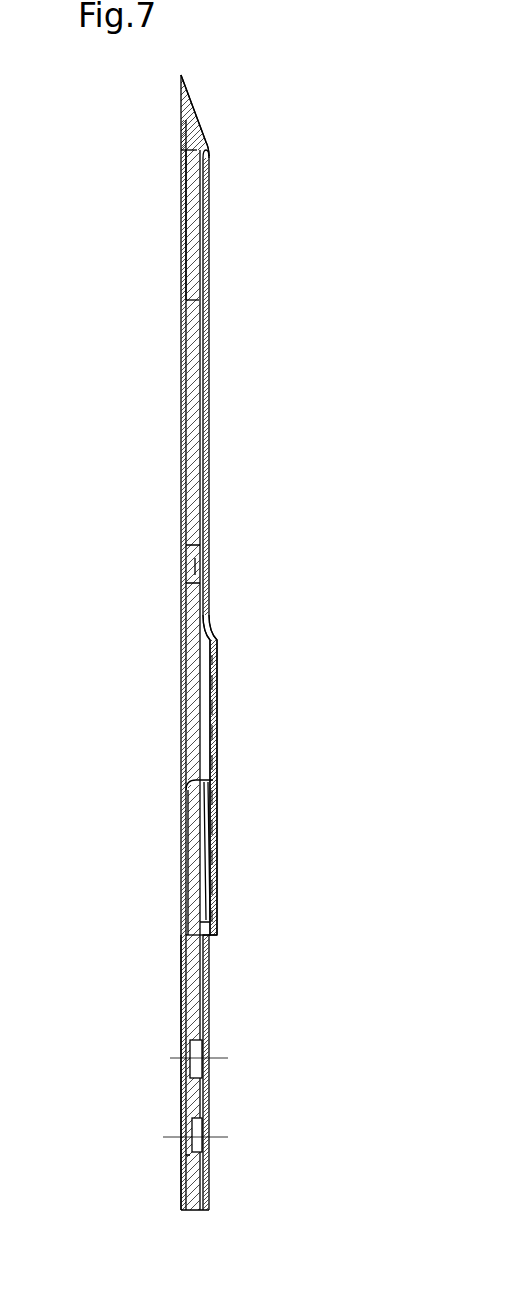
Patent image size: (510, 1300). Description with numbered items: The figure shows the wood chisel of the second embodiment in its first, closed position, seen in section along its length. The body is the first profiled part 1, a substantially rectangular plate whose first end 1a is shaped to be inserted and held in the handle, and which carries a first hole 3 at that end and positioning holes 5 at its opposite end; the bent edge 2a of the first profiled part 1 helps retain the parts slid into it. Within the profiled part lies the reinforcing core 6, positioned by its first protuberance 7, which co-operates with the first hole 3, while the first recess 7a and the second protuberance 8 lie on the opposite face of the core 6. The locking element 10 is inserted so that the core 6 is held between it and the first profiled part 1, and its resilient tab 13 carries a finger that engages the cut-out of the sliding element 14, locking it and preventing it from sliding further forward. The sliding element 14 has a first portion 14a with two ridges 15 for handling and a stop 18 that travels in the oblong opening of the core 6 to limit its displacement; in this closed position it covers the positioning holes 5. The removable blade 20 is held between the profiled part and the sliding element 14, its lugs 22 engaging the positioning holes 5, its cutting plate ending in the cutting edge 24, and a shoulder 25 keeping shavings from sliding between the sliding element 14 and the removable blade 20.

The first profiled part 1 is at (181, 522).
The first end of the first profiled part 1a is at (181, 982).
The bent edge 2a is at (218, 927).
The first hole 3 is at (186, 1157).
The positioning holes 5 is at (186, 240).
The core 6 is at (195, 650).
The first protuberance 7 is at (190, 1140).
The first recess 7a is at (205, 1141).
The second protuberance 8 is at (205, 1063).
The locking element 10 is at (205, 995).
The tab 13 is at (205, 850).
The sliding element 14 is at (202, 475).
The first portion of the sliding element 14a is at (212, 750).
The ridges 15 is at (220, 718).
The stop 18 is at (202, 565).
The removable blade 20 is at (201, 127).
The lugs 22 is at (184, 213).
The cutting edge 24 is at (181, 93).
The shoulder 25 is at (207, 145).